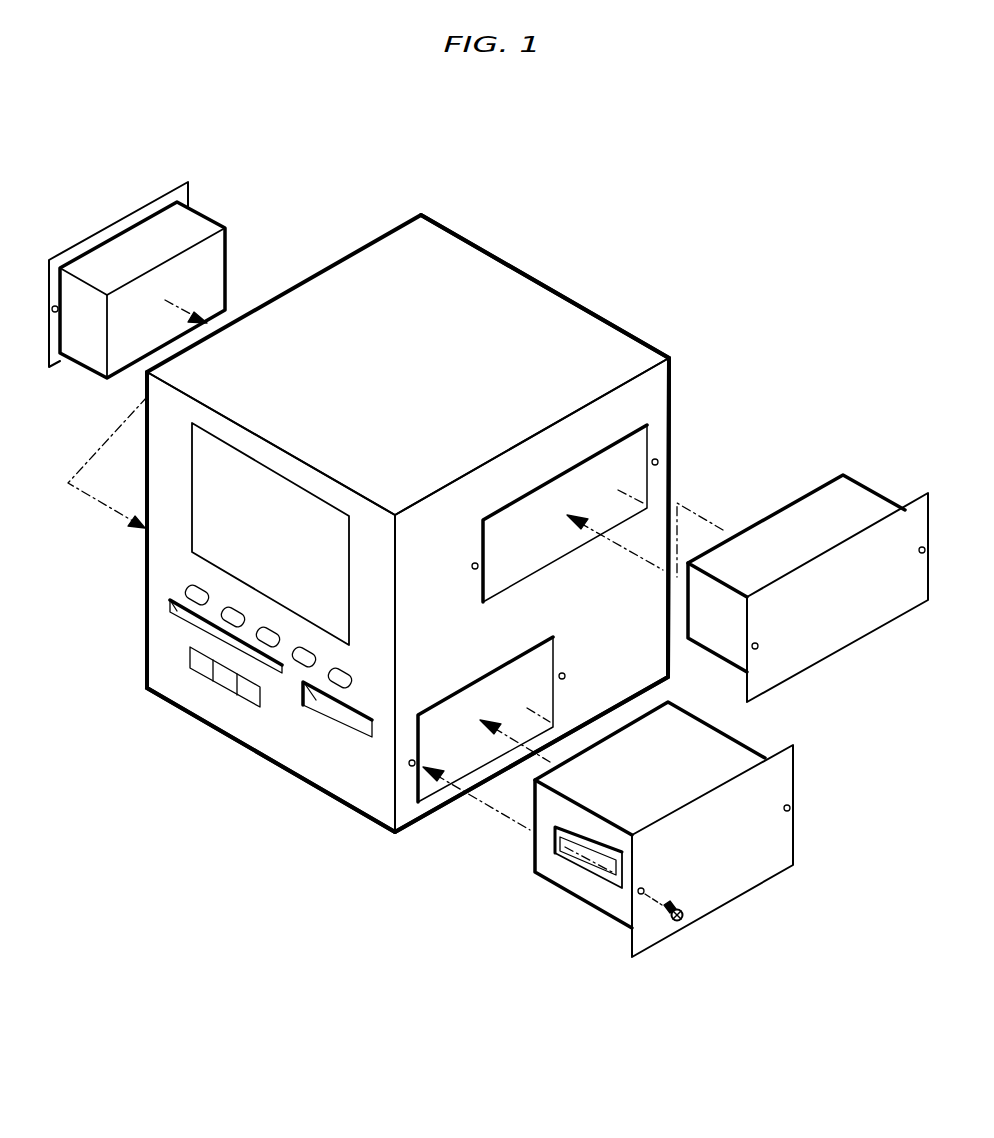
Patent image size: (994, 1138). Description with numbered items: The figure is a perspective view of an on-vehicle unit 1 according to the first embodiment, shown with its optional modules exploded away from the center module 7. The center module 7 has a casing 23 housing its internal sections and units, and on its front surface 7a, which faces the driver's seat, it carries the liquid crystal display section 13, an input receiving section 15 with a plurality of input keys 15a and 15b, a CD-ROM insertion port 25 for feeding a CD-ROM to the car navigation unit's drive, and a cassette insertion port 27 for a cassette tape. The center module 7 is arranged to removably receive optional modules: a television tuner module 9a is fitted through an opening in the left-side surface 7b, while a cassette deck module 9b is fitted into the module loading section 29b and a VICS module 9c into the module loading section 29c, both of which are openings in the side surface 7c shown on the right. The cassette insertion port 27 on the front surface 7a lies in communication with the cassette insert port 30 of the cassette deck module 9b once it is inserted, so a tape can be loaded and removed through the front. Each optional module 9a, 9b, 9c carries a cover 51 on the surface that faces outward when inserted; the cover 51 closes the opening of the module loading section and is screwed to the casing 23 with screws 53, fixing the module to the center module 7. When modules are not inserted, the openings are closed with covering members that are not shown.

The on-vehicle unit 1 is at (501, 204).
The center module 7 is at (549, 276).
The front surface 7a is at (283, 755).
The left-side surface 7b is at (262, 304).
The side face of housing 7c is at (660, 400).
The casing 23 is at (617, 331).
The liquid crystal display section 13 is at (232, 458).
The input receiving section 15 is at (97, 552).
The input keys 15a is at (230, 603).
The input keys 15b is at (223, 685).
The CD-ROM insertion port 25 is at (277, 667).
The cassette insertion port 27 is at (343, 735).
The module loading section 29b is at (492, 768).
The module loading section 29c is at (560, 560).
The television tuner module 9a is at (203, 213).
The cassette deck module 9b is at (690, 842).
The VICS module 9c is at (826, 657).
The cassette insert port 30 is at (598, 875).
The cover 51 is at (101, 228).
The screws 53 is at (676, 923).